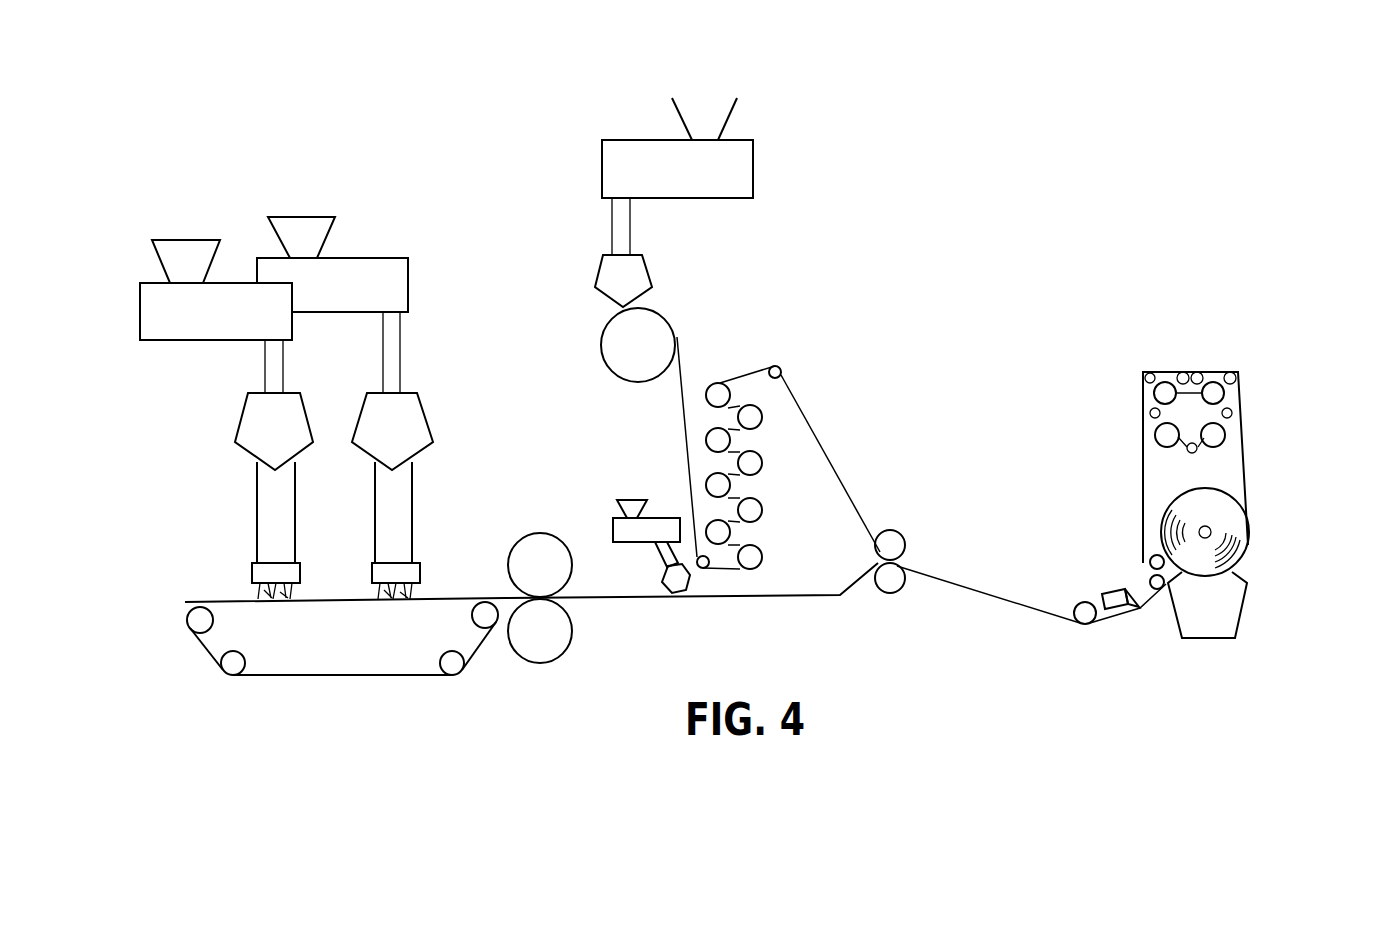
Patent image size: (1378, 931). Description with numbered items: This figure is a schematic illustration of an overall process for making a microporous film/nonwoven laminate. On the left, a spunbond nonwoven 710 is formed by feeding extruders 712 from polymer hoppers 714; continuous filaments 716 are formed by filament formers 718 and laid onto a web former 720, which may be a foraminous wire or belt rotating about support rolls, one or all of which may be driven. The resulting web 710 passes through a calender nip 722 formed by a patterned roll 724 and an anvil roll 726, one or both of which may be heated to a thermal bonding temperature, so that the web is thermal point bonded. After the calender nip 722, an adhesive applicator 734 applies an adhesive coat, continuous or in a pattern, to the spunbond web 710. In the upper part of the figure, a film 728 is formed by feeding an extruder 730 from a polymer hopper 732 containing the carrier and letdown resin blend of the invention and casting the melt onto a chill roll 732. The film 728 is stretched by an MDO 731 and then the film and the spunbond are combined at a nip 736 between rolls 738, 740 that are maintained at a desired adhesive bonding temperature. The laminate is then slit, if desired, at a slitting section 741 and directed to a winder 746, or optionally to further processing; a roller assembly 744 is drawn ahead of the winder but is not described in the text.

The spunbond nonwoven 710 is at (455, 598).
The extruders 712 is at (277, 266).
The polymer hoppers 714 is at (176, 247).
The continuous filaments 716 is at (372, 590).
The filament formers 718 is at (385, 517).
The web former 720 is at (308, 680).
The calender nip 722 is at (572, 586).
The patterned roll 724 is at (523, 578).
The anvil roll 726 is at (523, 644).
The film 728 is at (680, 393).
The extruder 730 is at (740, 158).
The MDO 731 is at (790, 426).
The polymer hopper / chill roll 732 is at (716, 115).
The adhesive applicator 734 is at (647, 520).
The nip 736 is at (912, 557).
The roll 738 is at (893, 538).
The roll 740 is at (893, 586).
The slitting section 741 is at (1091, 597).
The tension roller assembly 744 is at (1250, 399).
The winder 746 is at (1248, 567).